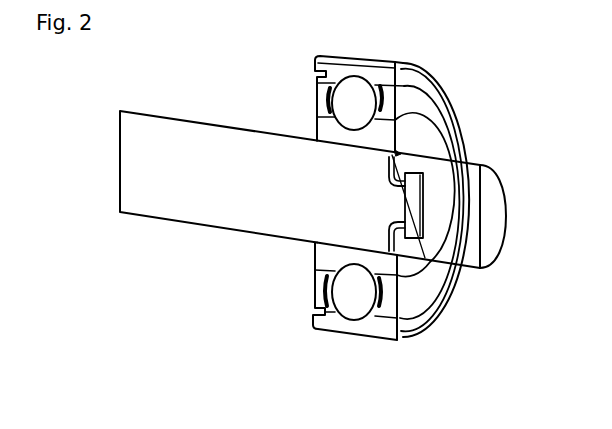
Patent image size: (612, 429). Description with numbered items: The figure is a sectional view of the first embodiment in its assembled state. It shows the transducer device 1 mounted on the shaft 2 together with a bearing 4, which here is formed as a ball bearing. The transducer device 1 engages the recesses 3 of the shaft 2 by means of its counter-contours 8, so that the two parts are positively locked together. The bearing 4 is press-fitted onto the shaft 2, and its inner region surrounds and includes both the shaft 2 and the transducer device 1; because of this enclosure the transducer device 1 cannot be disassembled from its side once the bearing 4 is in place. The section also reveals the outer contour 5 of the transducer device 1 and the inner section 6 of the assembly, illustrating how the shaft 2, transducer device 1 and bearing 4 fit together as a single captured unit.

The transducer device 1 is at (465, 212).
The shaft 2 is at (222, 195).
The recess 3 is at (395, 312).
The bearing 4 is at (312, 52).
The outer contour 5 is at (398, 152).
The inner section 6 is at (435, 287).
The counter-contour 8 is at (423, 307).